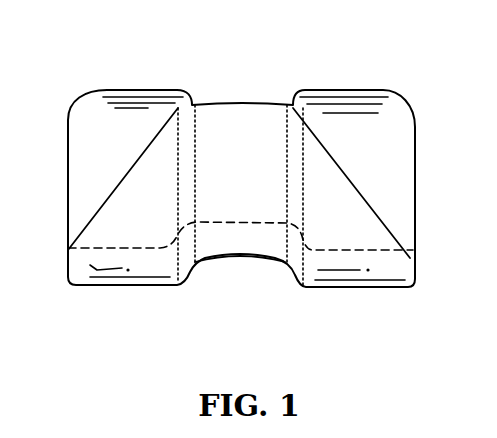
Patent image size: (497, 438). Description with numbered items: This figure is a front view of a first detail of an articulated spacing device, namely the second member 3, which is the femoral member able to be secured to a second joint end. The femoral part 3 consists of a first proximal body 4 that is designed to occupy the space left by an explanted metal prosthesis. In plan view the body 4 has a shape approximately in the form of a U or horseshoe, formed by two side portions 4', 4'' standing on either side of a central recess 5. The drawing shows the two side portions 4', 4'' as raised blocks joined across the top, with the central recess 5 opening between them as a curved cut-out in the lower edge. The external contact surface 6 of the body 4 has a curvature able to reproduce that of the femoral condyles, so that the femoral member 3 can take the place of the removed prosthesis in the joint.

The second member 3 is at (360, 84).
The first proximal body 4 is at (245, 72).
The side portion 4' is at (108, 158).
The side portion 4'' is at (381, 183).
The central recess 5 is at (267, 267).
The external contact surface 6 is at (372, 285).